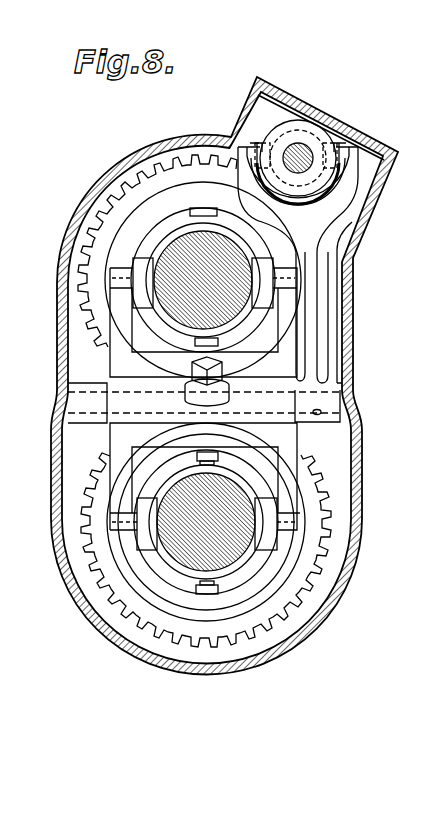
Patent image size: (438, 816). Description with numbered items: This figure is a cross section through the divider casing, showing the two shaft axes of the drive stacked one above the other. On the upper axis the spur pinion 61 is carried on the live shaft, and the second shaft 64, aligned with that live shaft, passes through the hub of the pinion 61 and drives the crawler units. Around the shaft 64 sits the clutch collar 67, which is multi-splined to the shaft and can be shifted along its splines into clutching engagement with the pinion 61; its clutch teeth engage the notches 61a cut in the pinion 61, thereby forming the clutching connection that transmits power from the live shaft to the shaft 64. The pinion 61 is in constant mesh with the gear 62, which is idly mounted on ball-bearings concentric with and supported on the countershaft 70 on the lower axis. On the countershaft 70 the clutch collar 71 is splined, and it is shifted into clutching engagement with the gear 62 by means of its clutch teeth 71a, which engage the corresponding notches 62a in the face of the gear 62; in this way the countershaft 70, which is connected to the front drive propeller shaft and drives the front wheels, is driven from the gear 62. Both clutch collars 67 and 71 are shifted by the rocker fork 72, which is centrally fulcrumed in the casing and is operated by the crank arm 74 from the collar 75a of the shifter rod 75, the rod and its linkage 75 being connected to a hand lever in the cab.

The spur pinion 61 is at (107, 212).
The notches in the pinion 61a is at (187, 356).
The gear 62 is at (122, 600).
The keys of lower gear hub 62a is at (204, 688).
The second shaft 64 is at (214, 262).
The clutch collar 67 is at (178, 232).
The countershaft 70 is at (193, 547).
The clutch collar 71 is at (243, 562).
The clutch teeth 71a is at (212, 462).
The rocker fork 72 is at (122, 475).
The crank arm 74 is at (328, 210).
The shifter rod 75 is at (308, 150).
The collar of shifter rod 75a is at (322, 178).